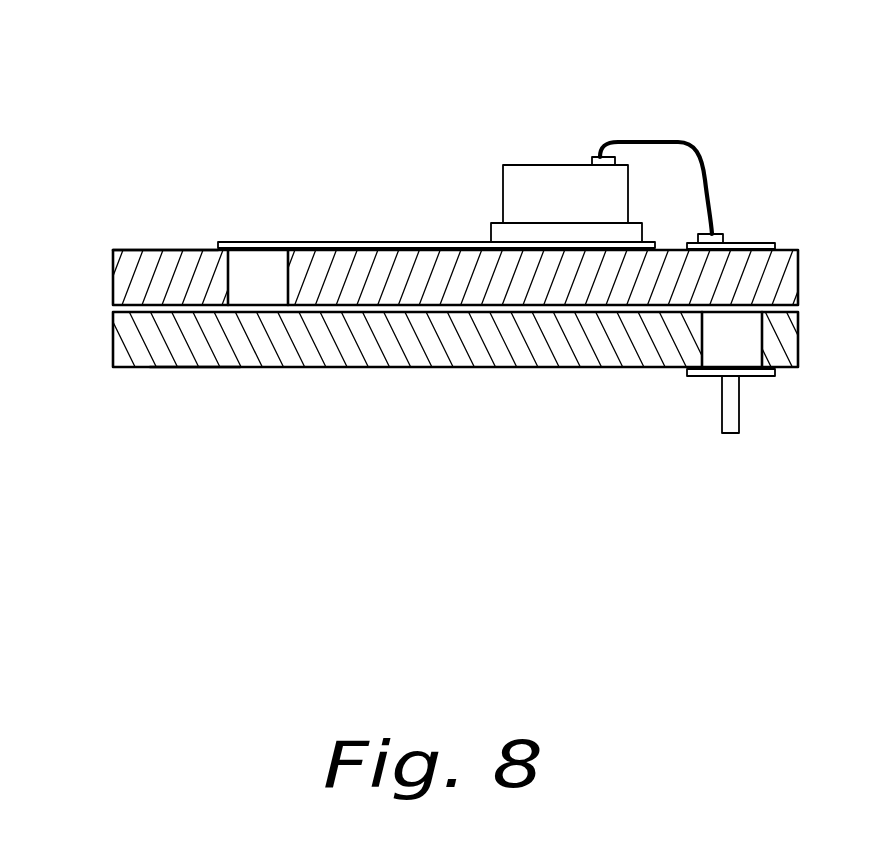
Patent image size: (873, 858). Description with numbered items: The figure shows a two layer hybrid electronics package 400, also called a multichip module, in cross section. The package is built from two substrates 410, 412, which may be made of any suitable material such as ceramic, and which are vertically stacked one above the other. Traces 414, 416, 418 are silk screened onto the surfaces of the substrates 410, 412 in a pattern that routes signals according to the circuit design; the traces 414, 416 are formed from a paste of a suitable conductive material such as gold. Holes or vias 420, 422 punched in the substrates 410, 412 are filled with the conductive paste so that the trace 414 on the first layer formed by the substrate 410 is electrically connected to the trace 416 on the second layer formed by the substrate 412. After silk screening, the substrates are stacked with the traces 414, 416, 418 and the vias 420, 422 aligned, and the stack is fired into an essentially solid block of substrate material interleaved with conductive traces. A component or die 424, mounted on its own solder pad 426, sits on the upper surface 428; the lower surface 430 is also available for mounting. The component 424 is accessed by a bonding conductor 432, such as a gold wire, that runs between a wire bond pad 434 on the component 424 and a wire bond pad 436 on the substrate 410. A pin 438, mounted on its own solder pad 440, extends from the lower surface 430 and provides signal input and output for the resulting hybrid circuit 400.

The hybrid electronics package 400 is at (323, 538).
The substrate 410 is at (113, 276).
The substrate 412 is at (113, 343).
The trace 414 is at (350, 242).
The trace 416 is at (393, 312).
The trace 418 is at (763, 243).
The via 420 is at (245, 283).
The via 422 is at (702, 349).
The component 424 is at (530, 165).
The solder pad 426 is at (493, 222).
The surface 428 is at (204, 248).
The surface 430 is at (195, 368).
The bonding conductor 432 is at (698, 143).
The wire bond pad 434 is at (596, 157).
The wire bond pad 436 is at (719, 233).
The pin 438 is at (740, 427).
The solder pad 440 is at (702, 377).